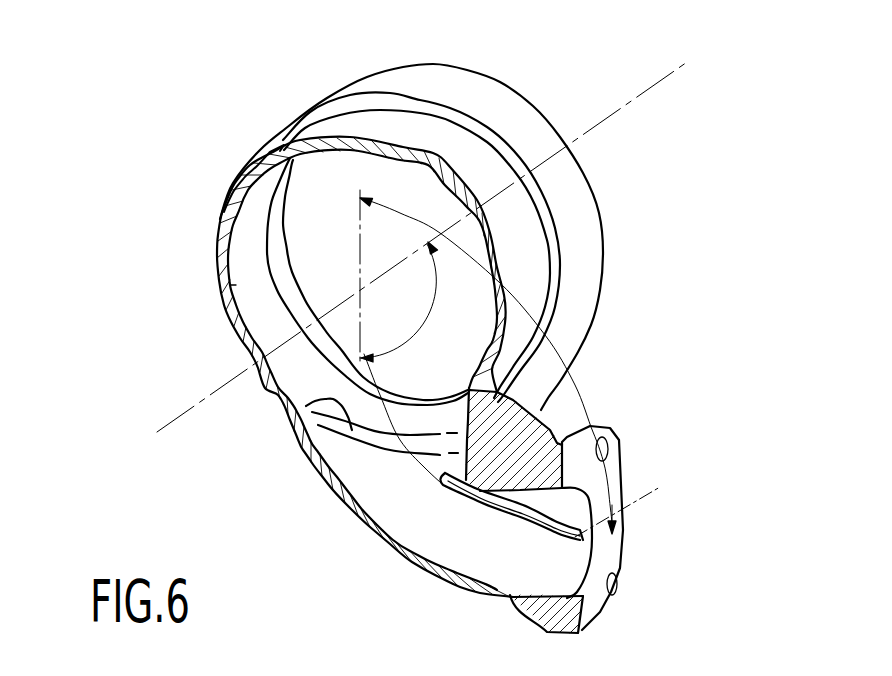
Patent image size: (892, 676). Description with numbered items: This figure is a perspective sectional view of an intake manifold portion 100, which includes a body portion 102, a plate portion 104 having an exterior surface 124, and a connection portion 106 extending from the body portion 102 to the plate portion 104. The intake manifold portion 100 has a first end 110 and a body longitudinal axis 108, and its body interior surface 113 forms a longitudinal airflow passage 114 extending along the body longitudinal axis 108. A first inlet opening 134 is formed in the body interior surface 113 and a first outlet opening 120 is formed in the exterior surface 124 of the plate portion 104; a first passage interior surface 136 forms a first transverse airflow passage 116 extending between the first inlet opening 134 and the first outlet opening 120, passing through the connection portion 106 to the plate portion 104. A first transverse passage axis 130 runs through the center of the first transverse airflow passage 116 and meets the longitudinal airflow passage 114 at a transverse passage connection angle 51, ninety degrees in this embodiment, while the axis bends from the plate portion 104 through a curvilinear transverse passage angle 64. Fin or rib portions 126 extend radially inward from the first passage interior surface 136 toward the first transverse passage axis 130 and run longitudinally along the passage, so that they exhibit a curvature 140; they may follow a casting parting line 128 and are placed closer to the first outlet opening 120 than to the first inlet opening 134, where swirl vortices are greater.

The intake manifold portion 100 is at (570, 62).
The body portion 102 is at (427, 127).
The plate portion 104 is at (598, 428).
The connection portion 106 is at (340, 512).
The body longitudinal axis 108 is at (662, 80).
The first end 110 is at (570, 193).
The body interior surface 113 is at (243, 258).
The longitudinal airflow passage 114 is at (258, 218).
The first transverse airflow passage 116 is at (563, 575).
The first outlet opening 120 is at (592, 568).
The exterior surface 124 is at (612, 567).
The fin or rib portion 126 is at (520, 527).
The casting parting line 128 is at (632, 498).
The first transverse passage axis 130 is at (600, 537).
The first inlet opening 134 is at (313, 404).
The first passage interior surface 136 is at (525, 563).
The curvature 140 is at (483, 507).
The transverse passage connection angle 51 is at (427, 322).
The transverse passage angle 64 is at (570, 370).